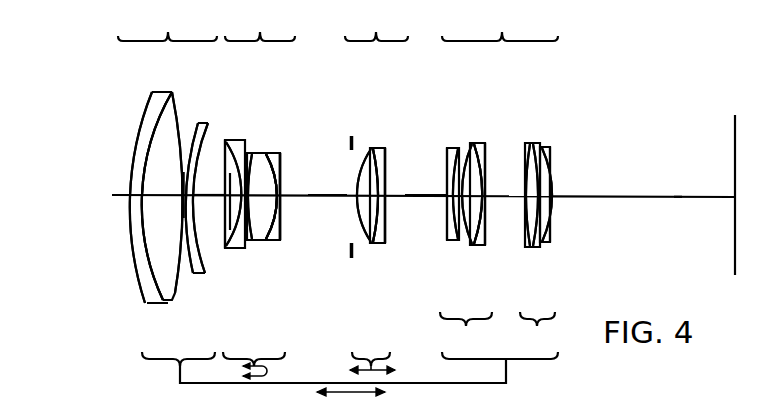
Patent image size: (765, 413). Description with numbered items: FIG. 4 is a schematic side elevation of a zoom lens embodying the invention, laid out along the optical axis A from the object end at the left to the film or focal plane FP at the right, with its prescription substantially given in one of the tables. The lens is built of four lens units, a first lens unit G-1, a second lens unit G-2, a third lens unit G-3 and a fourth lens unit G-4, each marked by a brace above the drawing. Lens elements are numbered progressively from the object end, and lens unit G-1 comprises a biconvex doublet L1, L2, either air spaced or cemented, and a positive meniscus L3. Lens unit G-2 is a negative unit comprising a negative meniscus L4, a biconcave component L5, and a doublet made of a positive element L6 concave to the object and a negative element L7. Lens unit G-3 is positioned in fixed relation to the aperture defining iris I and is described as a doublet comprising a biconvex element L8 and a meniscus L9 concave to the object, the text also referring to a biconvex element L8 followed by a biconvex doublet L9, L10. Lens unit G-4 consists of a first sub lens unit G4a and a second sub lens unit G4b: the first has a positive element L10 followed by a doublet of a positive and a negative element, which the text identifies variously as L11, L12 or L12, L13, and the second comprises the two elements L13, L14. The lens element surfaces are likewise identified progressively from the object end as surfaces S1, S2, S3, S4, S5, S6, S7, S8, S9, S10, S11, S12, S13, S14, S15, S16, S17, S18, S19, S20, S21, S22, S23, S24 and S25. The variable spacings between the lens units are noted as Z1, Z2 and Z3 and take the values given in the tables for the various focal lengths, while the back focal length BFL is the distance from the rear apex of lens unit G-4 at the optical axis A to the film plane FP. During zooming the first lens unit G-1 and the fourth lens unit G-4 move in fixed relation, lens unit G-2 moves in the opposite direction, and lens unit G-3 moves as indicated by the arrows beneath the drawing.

The doublet element L1 is at (148, 118).
The doublet element L2 is at (172, 122).
The positive meniscus L3 is at (200, 125).
The negative meniscus L4 is at (237, 141).
The biconcave component L5 is at (258, 151).
The positive element L6 is at (265, 160).
The negative element L7 is at (281, 173).
The biconvex element L8 is at (367, 149).
The meniscus L9 is at (383, 153).
The positive element L10 is at (451, 147).
The doublet element L11 is at (466, 142).
The doublet element L12 is at (484, 146).
The lens element L13 is at (533, 142).
The lens element L14 is at (548, 180).
The lens element surface S1 is at (132, 250).
The lens element surface S2 is at (153, 268).
The lens element surface S3 is at (177, 295).
The lens element surface S4 is at (194, 274).
The lens element surface S5 is at (205, 272).
The lens element surface S6 is at (225, 205).
The lens element surface S7 is at (238, 250).
The lens element surface S8 is at (249, 243).
The lens element surface S9 is at (266, 243).
The lens element surface S10 is at (272, 232).
The lens element surface S11 is at (277, 216).
The lens element surface S12 is at (282, 207).
The lens element surface S13 is at (358, 244).
The lens element surface S14 is at (379, 244).
The lens element surface S15 is at (384, 222).
The lens element surface S16 is at (387, 192).
The lens element surface S17 is at (456, 240).
The lens element surface S18 is at (457, 242).
The lens element surface S19 is at (471, 247).
The lens element surface S20 is at (484, 244).
The lens element surface S21 is at (487, 226).
The lens element surface S22 is at (521, 240).
The lens element surface S23 is at (543, 220).
The lens element surface S24 is at (553, 217).
The lens element surface S25 is at (551, 205).
The lens unit spacing Z1 is at (209, 186).
The lens unit spacing Z2 is at (327, 187).
The lens unit spacing Z3 is at (426, 187).
The aperture defining iris I is at (350, 143).
The focal plane FP is at (733, 136).
The optical axis A is at (677, 198).
The back focal length BFL is at (643, 184).
The first lens unit G-1 is at (167, 23).
The second lens unit G-2 is at (260, 23).
The third lens unit G-3 is at (376, 23).
The fourth lens unit G-4 is at (500, 182).
The first sub lens unit G4a is at (466, 329).
The second sub lens unit G4b is at (537, 329).